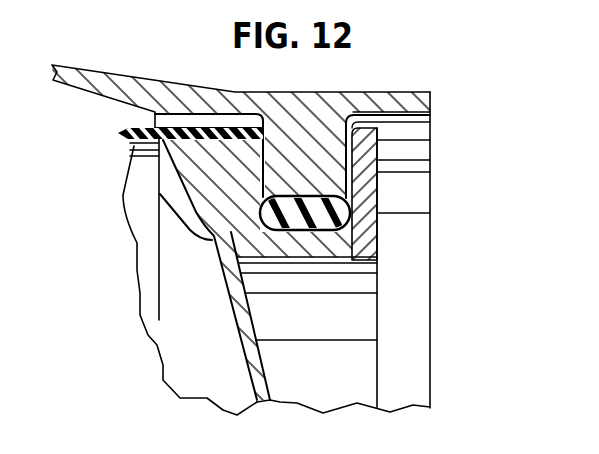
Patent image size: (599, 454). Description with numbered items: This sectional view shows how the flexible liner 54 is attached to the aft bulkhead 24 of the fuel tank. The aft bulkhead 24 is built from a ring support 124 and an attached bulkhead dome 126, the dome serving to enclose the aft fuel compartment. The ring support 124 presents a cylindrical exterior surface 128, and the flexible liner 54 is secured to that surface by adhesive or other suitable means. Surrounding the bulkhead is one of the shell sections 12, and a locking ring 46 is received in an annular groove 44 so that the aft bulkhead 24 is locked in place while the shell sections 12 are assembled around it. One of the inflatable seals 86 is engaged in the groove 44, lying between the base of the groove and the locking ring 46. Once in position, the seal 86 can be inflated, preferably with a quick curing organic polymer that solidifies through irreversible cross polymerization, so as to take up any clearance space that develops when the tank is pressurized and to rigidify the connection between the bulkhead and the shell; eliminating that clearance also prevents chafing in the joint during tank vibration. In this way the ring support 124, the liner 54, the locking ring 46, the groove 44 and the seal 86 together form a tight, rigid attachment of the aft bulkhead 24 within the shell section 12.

The shell section 12 is at (170, 102).
The aft bulkhead 24 is at (357, 357).
The annular groove 44 is at (340, 190).
The locking ring 46 is at (358, 152).
The flexible liner 54 is at (137, 129).
The inflatable seal 86 is at (345, 212).
The ring support 124 is at (181, 293).
The bulkhead dome 126 is at (248, 303).
The cylindrical exterior surface 128 is at (165, 145).